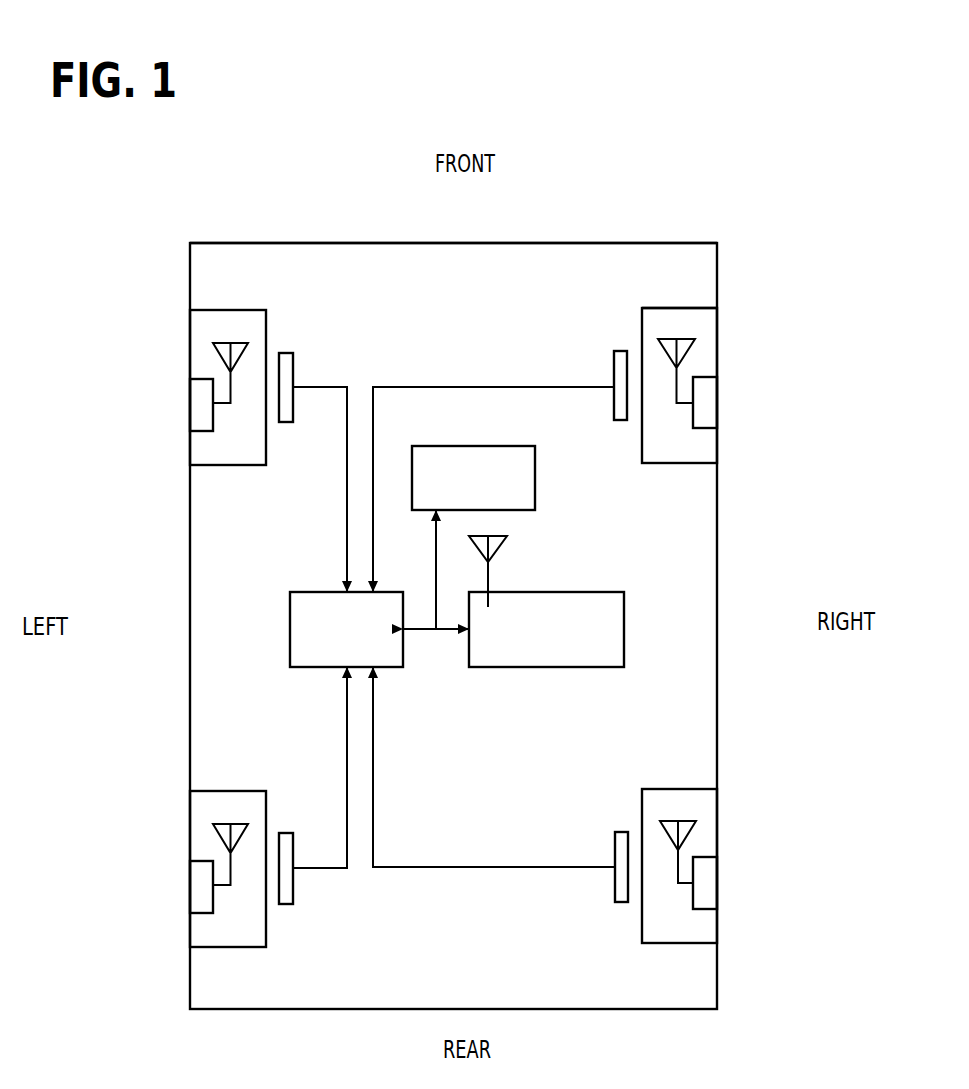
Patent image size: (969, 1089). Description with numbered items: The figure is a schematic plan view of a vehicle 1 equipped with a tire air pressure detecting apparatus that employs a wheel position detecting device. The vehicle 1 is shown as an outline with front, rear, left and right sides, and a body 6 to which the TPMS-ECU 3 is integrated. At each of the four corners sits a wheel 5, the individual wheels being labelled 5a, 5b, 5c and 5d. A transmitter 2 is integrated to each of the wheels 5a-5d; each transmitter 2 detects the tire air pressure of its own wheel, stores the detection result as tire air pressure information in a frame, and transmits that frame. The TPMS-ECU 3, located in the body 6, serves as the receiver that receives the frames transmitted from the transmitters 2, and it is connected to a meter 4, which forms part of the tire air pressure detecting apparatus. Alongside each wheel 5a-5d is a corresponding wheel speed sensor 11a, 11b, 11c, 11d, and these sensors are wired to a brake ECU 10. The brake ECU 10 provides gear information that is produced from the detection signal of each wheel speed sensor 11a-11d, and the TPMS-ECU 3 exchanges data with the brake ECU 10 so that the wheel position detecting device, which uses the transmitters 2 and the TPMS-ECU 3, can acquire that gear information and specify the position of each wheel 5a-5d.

The vehicle 1 is at (567, 230).
The transmitter 2 is at (203, 409).
The TPMS-ECU 3 is at (624, 642).
The meter 4 is at (535, 493).
The wheel 5 is at (667, 300).
The wheel 5a is at (693, 308).
The wheel 5b is at (210, 310).
The wheel 5c is at (690, 943).
The wheel 5d is at (218, 947).
The body 6 is at (642, 244).
The brake ECU 10 is at (290, 629).
The wheel speed sensor 11a is at (620, 420).
The wheel speed sensor 11b is at (286, 422).
The wheel speed sensor 11c is at (621, 832).
The wheel speed sensor 11d is at (286, 833).